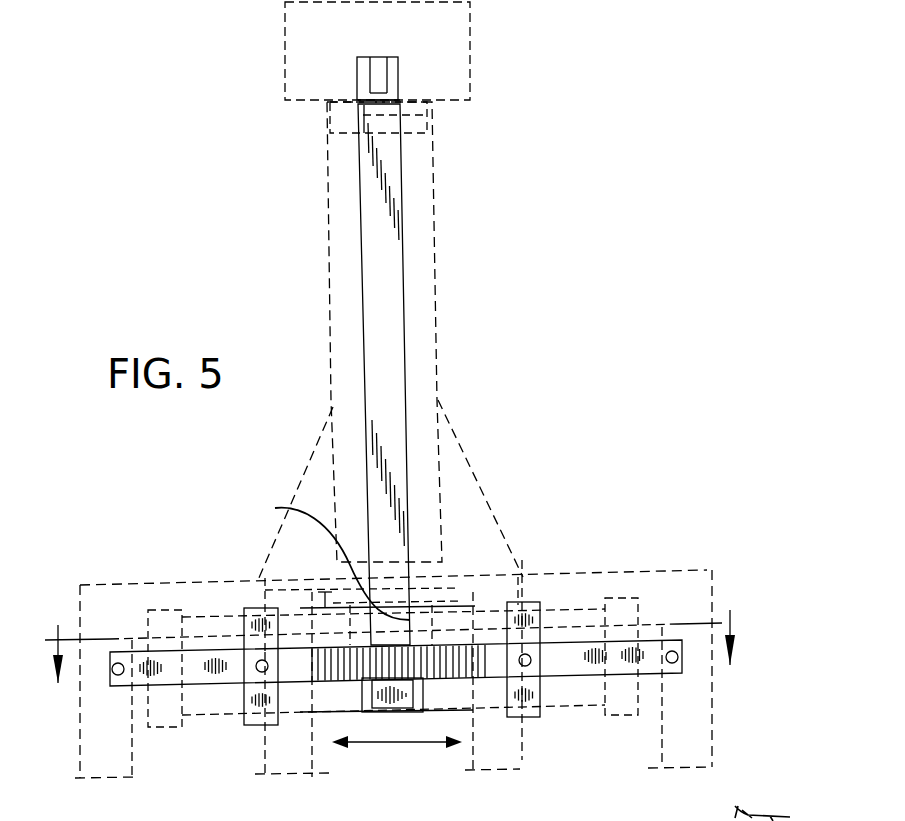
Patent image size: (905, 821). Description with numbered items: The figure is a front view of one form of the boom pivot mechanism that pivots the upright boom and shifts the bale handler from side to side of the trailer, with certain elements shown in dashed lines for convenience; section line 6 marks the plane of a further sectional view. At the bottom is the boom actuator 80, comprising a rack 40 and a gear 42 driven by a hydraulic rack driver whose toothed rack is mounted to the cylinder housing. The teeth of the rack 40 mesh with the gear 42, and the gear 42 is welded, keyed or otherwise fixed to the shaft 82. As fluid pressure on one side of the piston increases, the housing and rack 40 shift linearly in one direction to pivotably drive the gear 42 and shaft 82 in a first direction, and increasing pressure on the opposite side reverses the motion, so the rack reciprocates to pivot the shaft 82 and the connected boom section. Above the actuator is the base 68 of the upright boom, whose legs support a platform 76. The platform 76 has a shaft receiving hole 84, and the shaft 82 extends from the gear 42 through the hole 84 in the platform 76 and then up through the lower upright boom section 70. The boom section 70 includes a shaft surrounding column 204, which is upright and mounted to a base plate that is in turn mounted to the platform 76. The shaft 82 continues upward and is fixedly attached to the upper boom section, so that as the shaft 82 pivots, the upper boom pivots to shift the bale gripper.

The lower upright boom section 70 is at (446, 157).
The shaft surrounding column 204 is at (435, 183).
The shaft 82 is at (403, 250).
The shaft receiving hole 84 is at (325, 557).
The platform 76 is at (686, 568).
The base 68 is at (722, 720).
The boom actuator 80 is at (246, 745).
The rack 40 is at (493, 680).
The gear 42 is at (379, 668).
The section line 6- 6 is at (395, 637).